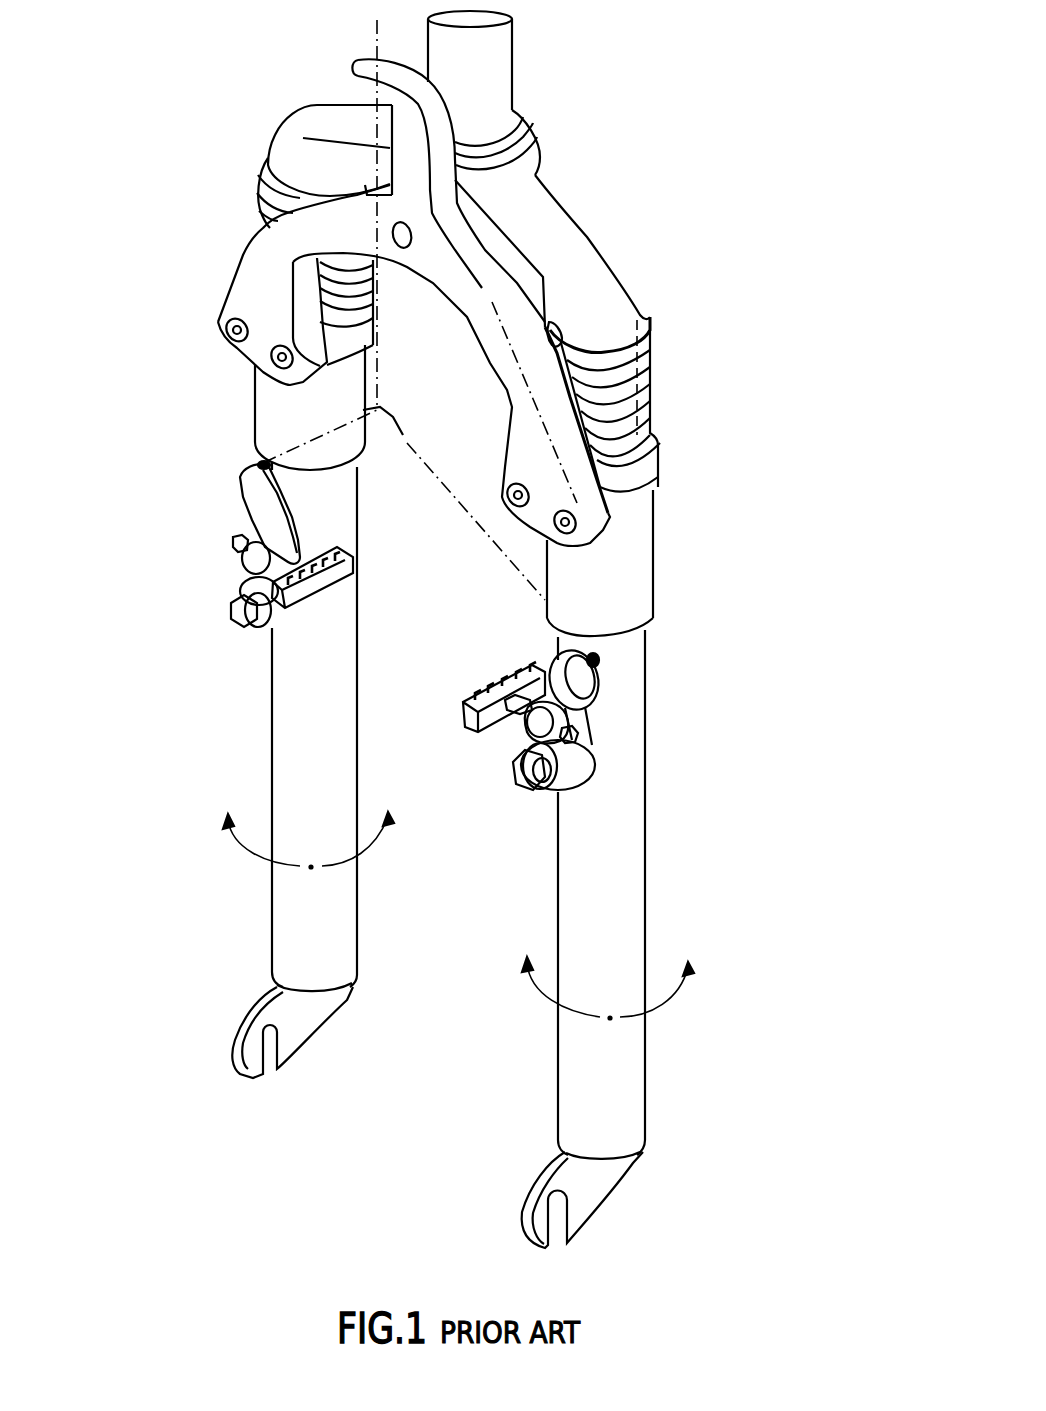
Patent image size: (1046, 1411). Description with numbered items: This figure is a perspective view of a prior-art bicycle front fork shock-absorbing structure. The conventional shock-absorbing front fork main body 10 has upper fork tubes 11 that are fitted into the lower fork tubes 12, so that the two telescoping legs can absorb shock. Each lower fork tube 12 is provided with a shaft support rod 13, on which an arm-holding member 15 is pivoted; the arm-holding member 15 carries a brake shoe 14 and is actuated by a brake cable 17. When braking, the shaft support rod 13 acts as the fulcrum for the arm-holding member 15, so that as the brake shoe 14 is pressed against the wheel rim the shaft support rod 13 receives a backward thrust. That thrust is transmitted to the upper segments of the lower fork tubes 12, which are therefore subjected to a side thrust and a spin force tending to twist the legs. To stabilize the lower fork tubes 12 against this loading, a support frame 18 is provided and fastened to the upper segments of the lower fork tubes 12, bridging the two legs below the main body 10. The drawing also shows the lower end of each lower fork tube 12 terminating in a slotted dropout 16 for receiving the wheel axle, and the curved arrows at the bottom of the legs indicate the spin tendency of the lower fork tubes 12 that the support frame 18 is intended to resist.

The shock-absorbing front fork main body 10 is at (500, 58).
The upper fork tubes 11 is at (643, 400).
The lower fork tubes 12 is at (628, 895).
The shaft support rod 13 is at (530, 790).
The brake shoe 14 is at (480, 687).
The arm-holding member 15 is at (573, 690).
The dropout 16 is at (593, 1190).
The brake cable 17 is at (405, 437).
The support frame 18 is at (480, 267).